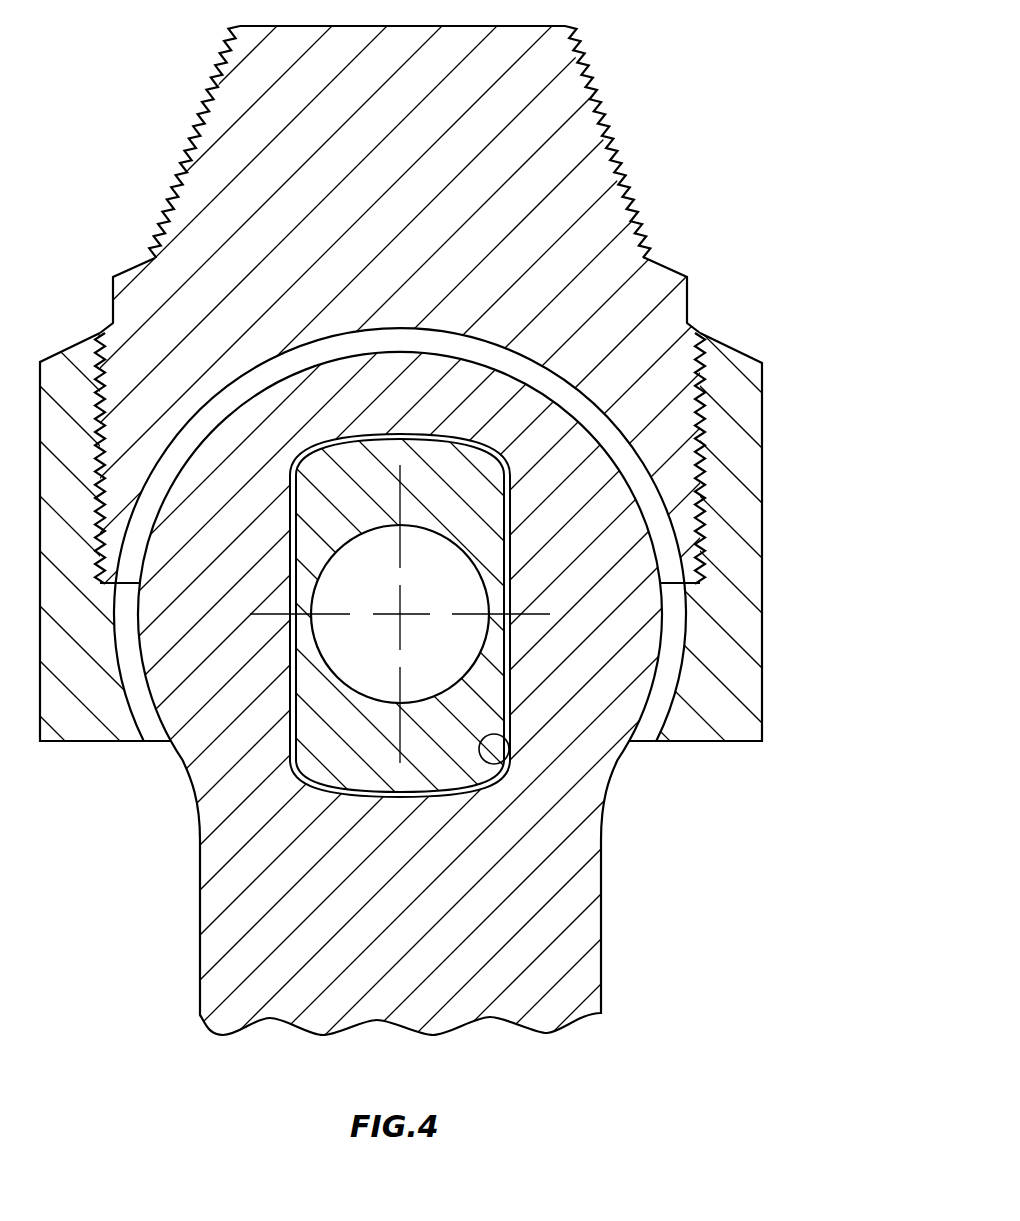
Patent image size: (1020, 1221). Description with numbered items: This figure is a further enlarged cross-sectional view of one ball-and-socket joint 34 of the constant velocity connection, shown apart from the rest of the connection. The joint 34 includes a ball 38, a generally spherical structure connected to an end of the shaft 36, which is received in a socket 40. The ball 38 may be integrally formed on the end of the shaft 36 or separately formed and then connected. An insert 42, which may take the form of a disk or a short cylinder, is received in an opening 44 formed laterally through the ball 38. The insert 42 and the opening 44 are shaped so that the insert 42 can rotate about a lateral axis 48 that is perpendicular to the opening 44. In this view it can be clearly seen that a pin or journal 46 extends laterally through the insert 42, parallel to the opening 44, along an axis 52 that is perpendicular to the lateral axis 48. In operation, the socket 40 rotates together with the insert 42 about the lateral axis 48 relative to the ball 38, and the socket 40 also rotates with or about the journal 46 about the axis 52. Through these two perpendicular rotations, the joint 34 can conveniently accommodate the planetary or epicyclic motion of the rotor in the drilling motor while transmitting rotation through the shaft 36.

The ball-and-socket joint 34 is at (695, 70).
The shaft 36 is at (200, 937).
The ball 38 is at (622, 475).
The socket 40 is at (683, 663).
The insert 42 is at (293, 727).
The opening 44 is at (502, 775).
The pin or journal 46 is at (375, 703).
The lateral axis 48 is at (537, 613).
The axis 52 is at (402, 613).